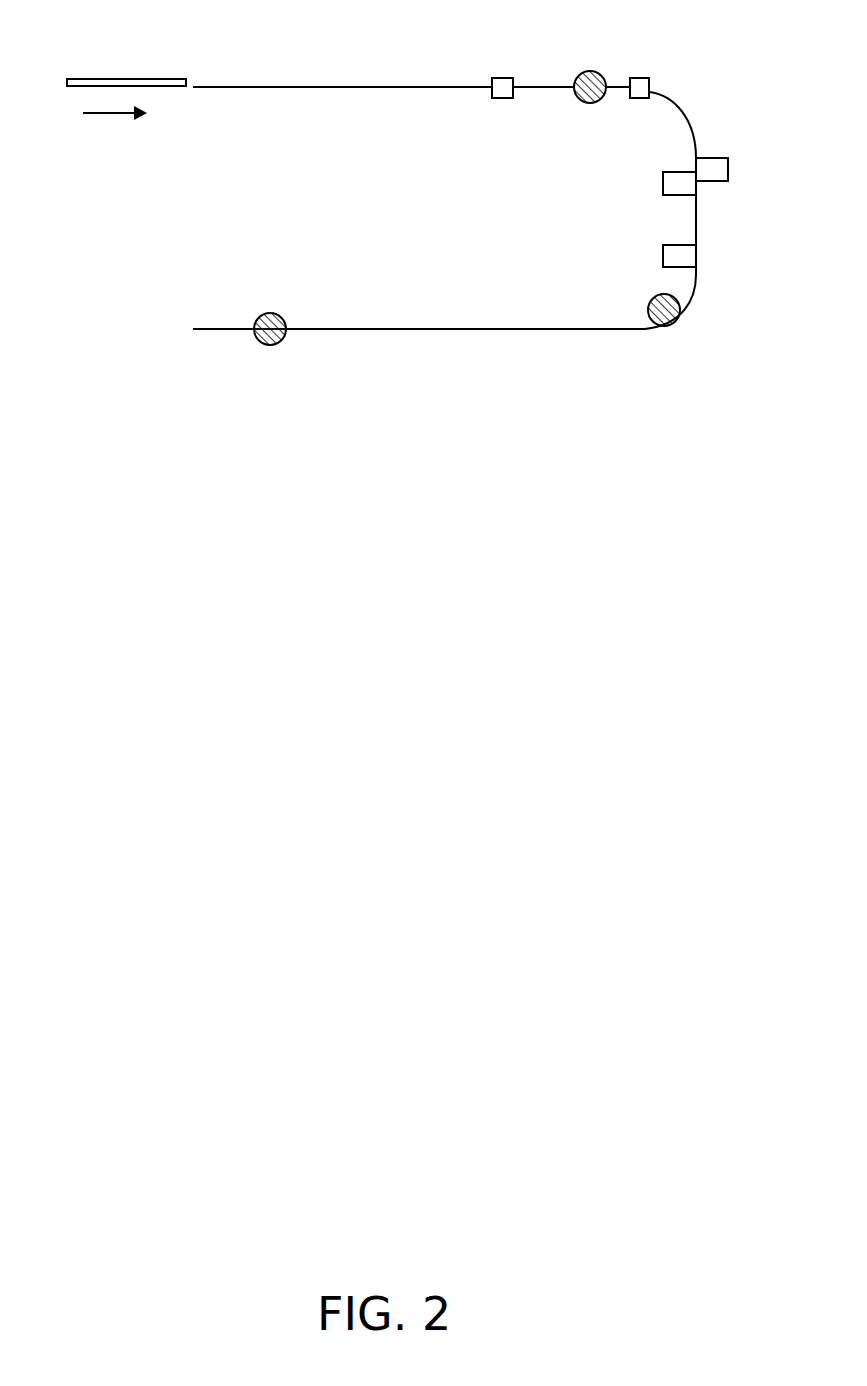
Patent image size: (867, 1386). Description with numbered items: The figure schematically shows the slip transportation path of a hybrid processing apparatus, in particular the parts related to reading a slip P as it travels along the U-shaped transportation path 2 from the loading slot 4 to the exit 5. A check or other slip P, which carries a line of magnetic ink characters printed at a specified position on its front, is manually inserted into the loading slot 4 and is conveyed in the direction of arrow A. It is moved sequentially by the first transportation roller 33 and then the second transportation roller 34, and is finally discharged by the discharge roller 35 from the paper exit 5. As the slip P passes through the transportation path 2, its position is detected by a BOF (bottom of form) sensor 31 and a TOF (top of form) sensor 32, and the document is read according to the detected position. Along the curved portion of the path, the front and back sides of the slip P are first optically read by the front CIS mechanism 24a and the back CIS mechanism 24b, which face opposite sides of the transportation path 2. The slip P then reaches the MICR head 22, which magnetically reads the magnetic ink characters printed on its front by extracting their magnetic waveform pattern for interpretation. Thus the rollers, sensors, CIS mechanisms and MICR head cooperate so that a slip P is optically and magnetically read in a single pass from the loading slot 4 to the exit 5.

The slip P is at (128, 79).
The arrow A is at (115, 124).
The transportation path 2 is at (375, 87).
The loading slot 4 is at (199, 87).
The exit 5 is at (197, 331).
The BOF sensor 31 is at (502, 78).
The first transportation roller 33 is at (590, 71).
The TOF sensor 32 is at (640, 78).
The front CIS mechanism 24a is at (663, 185).
The back CIS mechanism 24b is at (722, 158).
The MICR head 22 is at (663, 257).
The second transportation roller 34 is at (674, 322).
The discharge roller 35 is at (268, 345).